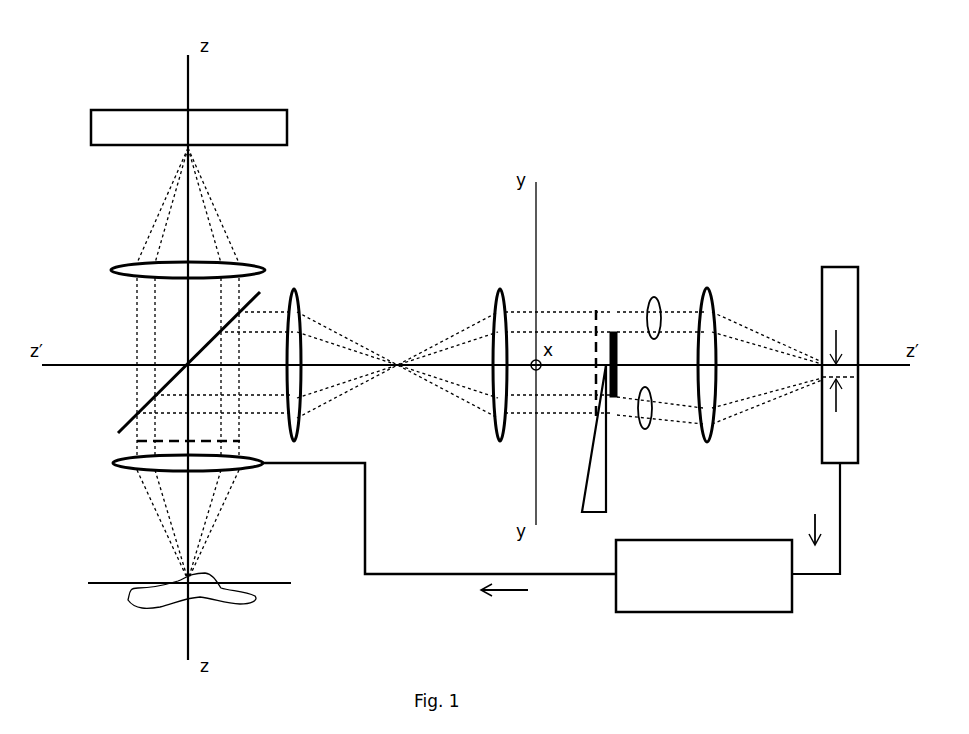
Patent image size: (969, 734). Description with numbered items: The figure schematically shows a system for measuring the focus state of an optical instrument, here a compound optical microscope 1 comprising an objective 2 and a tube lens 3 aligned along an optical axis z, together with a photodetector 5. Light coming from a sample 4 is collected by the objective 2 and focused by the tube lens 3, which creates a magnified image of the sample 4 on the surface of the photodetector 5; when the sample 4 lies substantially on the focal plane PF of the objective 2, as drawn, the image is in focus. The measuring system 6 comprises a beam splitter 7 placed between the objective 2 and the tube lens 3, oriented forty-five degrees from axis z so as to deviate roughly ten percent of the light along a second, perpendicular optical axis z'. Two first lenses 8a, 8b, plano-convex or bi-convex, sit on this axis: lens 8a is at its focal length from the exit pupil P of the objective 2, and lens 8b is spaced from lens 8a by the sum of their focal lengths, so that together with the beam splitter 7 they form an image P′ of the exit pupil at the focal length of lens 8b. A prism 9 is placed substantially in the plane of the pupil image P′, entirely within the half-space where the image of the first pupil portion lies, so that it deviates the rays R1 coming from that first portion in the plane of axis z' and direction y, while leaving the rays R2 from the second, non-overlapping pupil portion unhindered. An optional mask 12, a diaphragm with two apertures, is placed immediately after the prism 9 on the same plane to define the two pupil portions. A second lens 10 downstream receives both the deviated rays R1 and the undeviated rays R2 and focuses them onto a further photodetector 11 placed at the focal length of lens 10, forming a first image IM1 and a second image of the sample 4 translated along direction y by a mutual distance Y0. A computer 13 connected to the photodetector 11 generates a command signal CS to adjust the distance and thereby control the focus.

The compound optical microscope 1 is at (64, 76).
The objective 2 is at (124, 468).
The tube lens 3 is at (122, 265).
The sample 4 is at (129, 595).
The photodetector 5 is at (90, 125).
The system for measuring the focus state 6 is at (657, 128).
The beam splitter 7 is at (122, 424).
The first lens 8a is at (300, 306).
The second of the first lenses 8b is at (494, 300).
The prism 9 is at (607, 486).
The second lens 10 is at (708, 289).
The photodetector 11 is at (821, 290).
The mask 12 is at (612, 331).
The computer 13 is at (704, 540).
The exit pupil P is at (136, 440).
The image of the exit pupil P′ is at (595, 310).
The focal plane PF is at (278, 583).
The rays from the first pupil portion R1 is at (648, 428).
The rays from the second pupil portion R2 is at (655, 297).
The mutual distance Y0 is at (838, 359).
The command signal CS is at (520, 591).
The first image IM1 is at (798, 517).